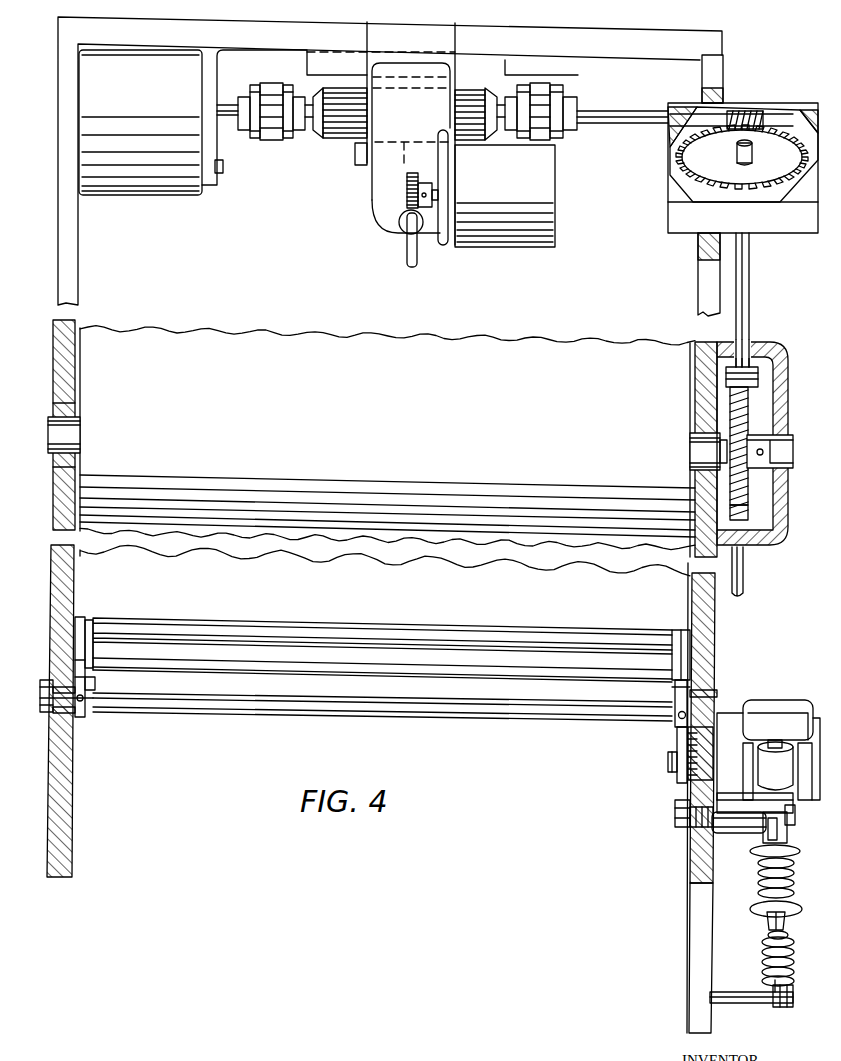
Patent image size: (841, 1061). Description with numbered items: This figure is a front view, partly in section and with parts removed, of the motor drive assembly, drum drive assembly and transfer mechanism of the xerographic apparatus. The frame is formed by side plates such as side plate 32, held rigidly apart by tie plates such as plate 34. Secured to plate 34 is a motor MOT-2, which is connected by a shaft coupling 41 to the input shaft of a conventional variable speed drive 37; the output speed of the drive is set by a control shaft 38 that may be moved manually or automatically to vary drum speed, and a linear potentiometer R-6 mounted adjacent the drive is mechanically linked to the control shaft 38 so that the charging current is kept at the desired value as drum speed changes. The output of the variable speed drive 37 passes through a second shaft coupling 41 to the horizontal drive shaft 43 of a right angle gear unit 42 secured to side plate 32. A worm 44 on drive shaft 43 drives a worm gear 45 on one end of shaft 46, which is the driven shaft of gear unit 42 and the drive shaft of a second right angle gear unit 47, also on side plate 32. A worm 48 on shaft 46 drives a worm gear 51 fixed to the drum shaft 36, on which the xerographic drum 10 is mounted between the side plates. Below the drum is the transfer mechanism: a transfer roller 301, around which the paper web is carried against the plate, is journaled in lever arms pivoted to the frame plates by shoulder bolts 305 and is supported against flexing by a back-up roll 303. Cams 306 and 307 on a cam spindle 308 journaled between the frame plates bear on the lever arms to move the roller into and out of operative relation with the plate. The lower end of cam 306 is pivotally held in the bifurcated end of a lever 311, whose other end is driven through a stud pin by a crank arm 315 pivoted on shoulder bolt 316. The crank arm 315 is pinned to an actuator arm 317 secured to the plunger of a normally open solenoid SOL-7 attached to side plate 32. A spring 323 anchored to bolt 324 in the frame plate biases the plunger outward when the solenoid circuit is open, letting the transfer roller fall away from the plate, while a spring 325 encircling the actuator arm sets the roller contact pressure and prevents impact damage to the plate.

The tie plate 34 is at (657, 31).
The side plate 32 is at (730, 70).
The motor MOT-2 is at (157, 186).
The shaft coupling 41 is at (273, 134).
The variable speed drive 37 is at (333, 136).
The control shaft 38 is at (414, 265).
The linear potentiometer R-6 is at (556, 192).
The drive shaft 43 is at (604, 124).
The right angle gear unit 42 is at (790, 235).
The worm 44 is at (752, 113).
The worm gear 45 is at (756, 188).
The shaft 46 is at (736, 162).
The xerographic drum 10 is at (484, 343).
The second right angle gear unit 47 is at (775, 531).
The worm 48 is at (758, 380).
The worm gear 51 is at (752, 503).
The drum shaft 36 is at (788, 446).
The transfer roller 301 is at (501, 632).
The back-up roll 303 is at (497, 675).
The cam spindle 308 is at (353, 711).
The cam 307 is at (88, 714).
The shoulder bolt 305 is at (672, 698).
The cam 306 is at (673, 722).
The lever 311 is at (679, 786).
The solenoid SOL-7 is at (778, 706).
The shoulder bolt 316 is at (807, 817).
The actuator arm 317 is at (786, 836).
The crank arm 315 is at (735, 834).
The spring 325 is at (760, 884).
The spring 323 is at (762, 965).
The bolt 324 is at (788, 1006).